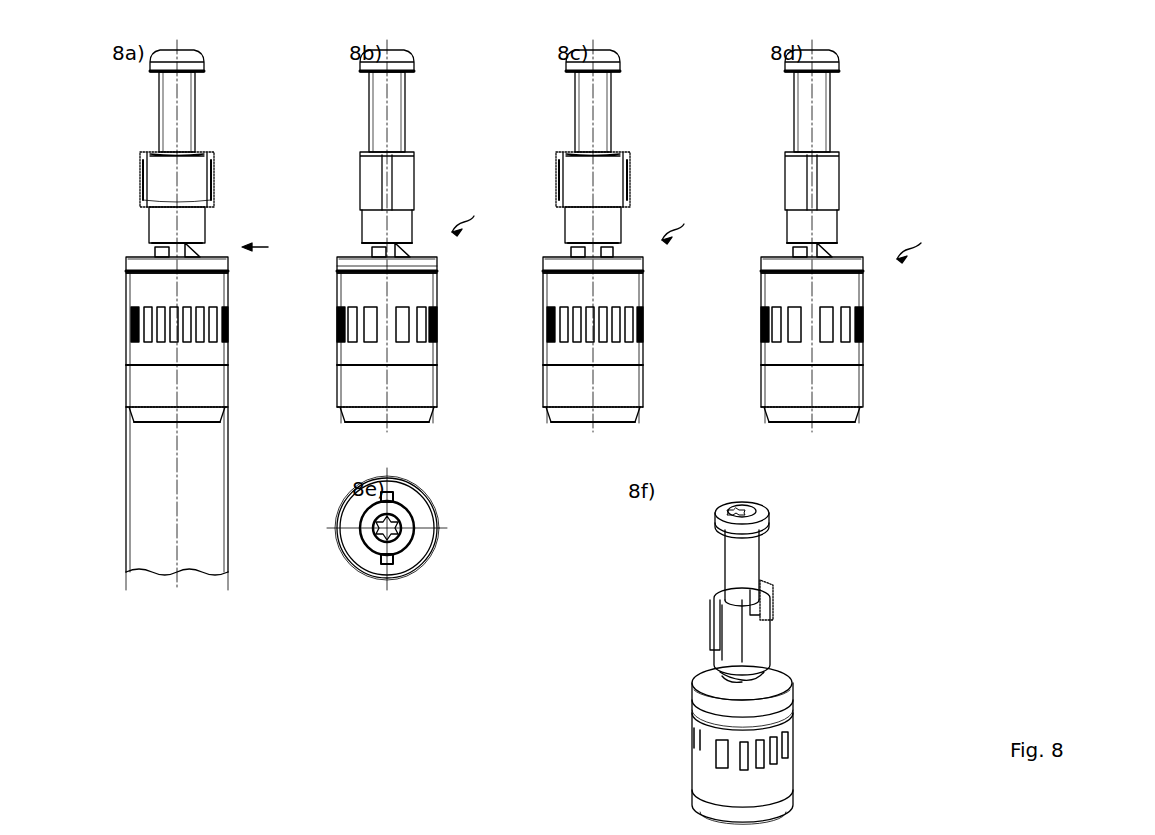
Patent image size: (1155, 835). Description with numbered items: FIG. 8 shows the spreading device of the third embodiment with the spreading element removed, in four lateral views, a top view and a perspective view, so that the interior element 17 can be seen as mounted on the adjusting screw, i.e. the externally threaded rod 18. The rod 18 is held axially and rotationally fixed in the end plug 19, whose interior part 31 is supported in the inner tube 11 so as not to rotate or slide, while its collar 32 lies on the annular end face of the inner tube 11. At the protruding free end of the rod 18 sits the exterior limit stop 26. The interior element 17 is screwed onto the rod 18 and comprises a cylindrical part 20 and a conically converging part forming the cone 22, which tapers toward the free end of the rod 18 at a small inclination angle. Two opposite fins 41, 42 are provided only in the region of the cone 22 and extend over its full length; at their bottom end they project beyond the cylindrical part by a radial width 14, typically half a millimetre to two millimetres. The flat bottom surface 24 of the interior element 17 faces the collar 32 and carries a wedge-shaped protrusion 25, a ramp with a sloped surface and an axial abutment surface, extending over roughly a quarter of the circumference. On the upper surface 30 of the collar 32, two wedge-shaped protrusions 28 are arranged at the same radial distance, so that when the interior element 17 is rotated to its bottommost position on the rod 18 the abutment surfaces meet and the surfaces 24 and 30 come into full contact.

The inner tube 11 is at (156, 494).
The radial width 14 is at (162, 230).
The interior element 17 is at (600, 230).
The externally threaded rod 18 is at (208, 135).
The end plug 19 is at (162, 374).
The cylindrical part 20 is at (170, 236).
The cone 22 is at (238, 190).
The bottom surface 24 is at (373, 266).
The wedge shaped protrusion 25 is at (236, 278).
The exterior limit stop 26 is at (216, 66).
The protrusions 28 is at (172, 270).
The upper surface 30 is at (230, 292).
The interior part 31 is at (224, 316).
The collar 32 is at (174, 292).
The fin 41 is at (240, 208).
The fin 42 is at (168, 183).